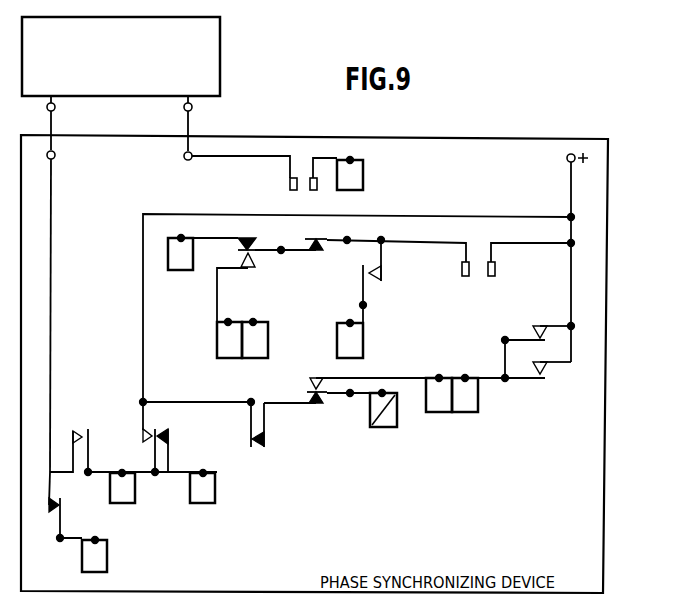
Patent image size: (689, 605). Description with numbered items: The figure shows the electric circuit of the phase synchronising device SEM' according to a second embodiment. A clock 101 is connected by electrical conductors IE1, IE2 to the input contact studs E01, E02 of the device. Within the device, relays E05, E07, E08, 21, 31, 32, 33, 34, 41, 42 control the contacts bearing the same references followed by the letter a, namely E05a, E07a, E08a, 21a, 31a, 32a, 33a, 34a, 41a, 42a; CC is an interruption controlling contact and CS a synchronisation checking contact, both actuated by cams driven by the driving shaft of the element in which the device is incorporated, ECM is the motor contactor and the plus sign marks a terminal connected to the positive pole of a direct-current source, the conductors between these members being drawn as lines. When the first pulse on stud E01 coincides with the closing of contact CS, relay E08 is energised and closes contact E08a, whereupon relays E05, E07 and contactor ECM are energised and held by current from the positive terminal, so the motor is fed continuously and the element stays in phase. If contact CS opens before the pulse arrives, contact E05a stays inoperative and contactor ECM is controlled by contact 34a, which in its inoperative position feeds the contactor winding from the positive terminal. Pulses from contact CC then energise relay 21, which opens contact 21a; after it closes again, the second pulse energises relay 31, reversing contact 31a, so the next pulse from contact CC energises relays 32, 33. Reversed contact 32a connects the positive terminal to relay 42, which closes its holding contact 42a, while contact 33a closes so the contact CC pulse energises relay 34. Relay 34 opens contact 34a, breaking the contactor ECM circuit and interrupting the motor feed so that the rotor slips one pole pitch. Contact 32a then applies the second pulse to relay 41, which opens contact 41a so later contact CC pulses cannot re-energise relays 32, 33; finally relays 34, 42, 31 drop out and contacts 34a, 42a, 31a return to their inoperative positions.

The clock 101 is at (221, 68).
The electrical conductor IE2 is at (50, 117).
The electrical conductor IE1 is at (190, 118).
The input contact stud E02 is at (54, 160).
The input contact stud E01 is at (184, 158).
The synchronisation checking contact CS is at (264, 166).
The relay E08 is at (363, 183).
The synchronising device SEM' is at (455, 135).
The interruption controlling contact CC is at (449, 250).
The relay 21 is at (168, 252).
The contact 31a is at (256, 245).
The contact 41a is at (303, 241).
The relay 32 is at (226, 347).
The relay 33 is at (253, 350).
The contact 33a is at (368, 282).
The relay 34 is at (357, 345).
The contact E05a is at (309, 382).
The motor contactor ECM is at (375, 430).
The relay E05 is at (433, 382).
The relay E07 is at (460, 405).
The contact E07a is at (527, 333).
The contact E08a is at (542, 366).
The contact 34a is at (256, 448).
The contact 42a is at (85, 428).
The relay 42 is at (126, 490).
The contact 32a is at (148, 431).
The relay 41 is at (208, 493).
The contact 21a is at (52, 513).
The relay 31 is at (103, 558).